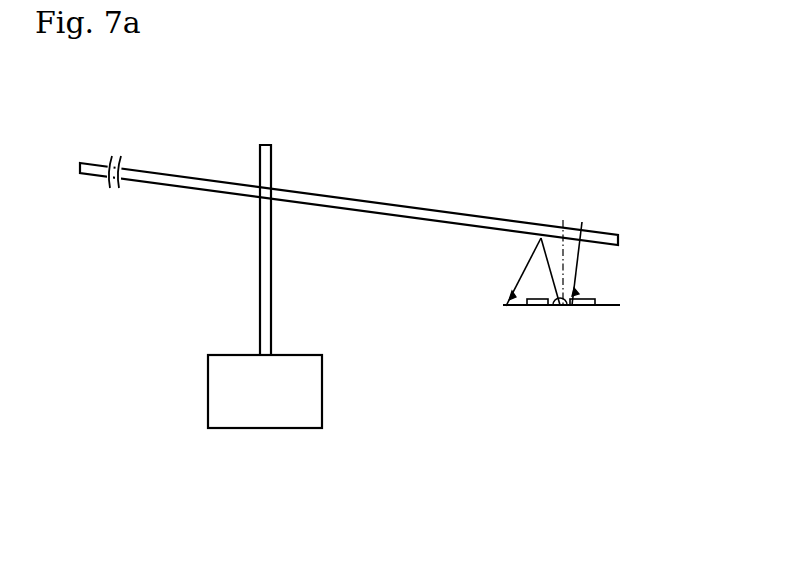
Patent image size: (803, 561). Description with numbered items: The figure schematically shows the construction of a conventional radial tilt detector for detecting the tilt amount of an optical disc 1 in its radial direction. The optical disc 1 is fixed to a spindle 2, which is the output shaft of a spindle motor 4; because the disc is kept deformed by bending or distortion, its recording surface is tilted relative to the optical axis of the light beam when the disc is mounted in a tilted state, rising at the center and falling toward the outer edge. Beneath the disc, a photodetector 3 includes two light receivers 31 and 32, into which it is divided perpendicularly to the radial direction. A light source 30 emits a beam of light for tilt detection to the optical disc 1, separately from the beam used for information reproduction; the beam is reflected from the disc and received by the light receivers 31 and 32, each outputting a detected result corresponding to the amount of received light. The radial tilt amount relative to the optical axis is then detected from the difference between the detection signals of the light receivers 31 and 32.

The optical disc 1 is at (582, 222).
The spindle 2 is at (272, 160).
The photodetector 3 is at (612, 305).
The spindle motor 4 is at (322, 388).
The light source 30 is at (558, 305).
The light receiver 31 is at (587, 306).
The light receiver 32 is at (537, 305).